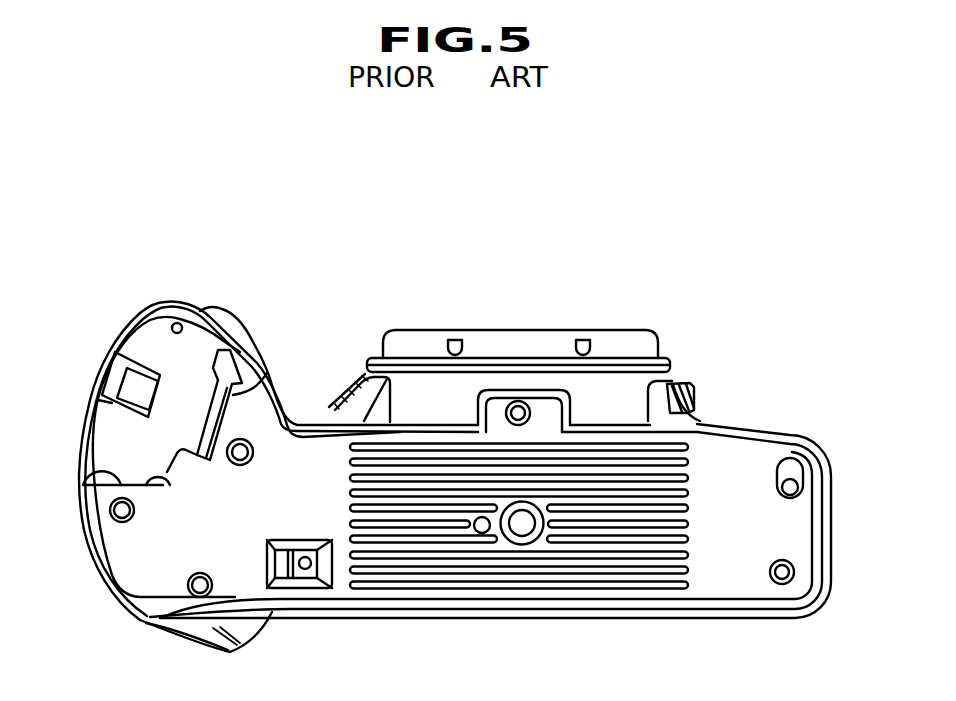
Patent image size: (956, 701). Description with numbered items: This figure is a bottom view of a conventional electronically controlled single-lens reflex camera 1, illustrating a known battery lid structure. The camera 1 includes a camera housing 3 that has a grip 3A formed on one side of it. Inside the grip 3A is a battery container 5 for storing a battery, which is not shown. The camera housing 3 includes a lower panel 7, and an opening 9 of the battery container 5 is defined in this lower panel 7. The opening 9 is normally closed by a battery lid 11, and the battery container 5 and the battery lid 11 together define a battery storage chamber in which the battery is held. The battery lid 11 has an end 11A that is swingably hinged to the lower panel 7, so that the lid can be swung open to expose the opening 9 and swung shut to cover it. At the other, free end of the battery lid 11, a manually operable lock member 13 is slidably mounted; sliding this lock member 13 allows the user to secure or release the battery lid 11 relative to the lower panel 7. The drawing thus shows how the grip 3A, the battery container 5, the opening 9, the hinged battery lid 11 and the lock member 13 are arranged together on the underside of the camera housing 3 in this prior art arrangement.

The single-lens reflex camera 1 is at (744, 425).
The camera housing 3 is at (730, 619).
The grip 3A is at (223, 313).
The battery container 5 is at (86, 472).
The lower panel 7 is at (252, 582).
The opening 9 is at (168, 480).
The battery lid 11 is at (163, 317).
The end of battery lid 11A is at (265, 380).
The lock member 13 is at (142, 383).